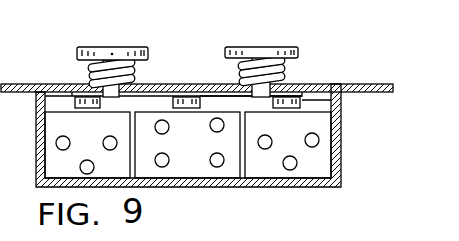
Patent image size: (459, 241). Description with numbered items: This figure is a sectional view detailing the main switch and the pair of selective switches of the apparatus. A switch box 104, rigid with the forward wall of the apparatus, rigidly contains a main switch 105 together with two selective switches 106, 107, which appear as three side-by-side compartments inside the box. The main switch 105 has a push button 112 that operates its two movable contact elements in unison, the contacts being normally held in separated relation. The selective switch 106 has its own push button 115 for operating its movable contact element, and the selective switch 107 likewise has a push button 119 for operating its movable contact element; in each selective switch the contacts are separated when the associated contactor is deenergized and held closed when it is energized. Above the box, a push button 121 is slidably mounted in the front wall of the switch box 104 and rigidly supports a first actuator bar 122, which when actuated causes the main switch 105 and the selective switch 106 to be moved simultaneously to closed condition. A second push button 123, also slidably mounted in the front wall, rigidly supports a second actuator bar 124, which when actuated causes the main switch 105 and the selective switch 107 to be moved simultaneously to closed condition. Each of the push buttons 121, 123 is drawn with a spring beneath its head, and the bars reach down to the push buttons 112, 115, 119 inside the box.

The switch box 104 is at (341, 148).
The main switch 105 is at (187, 145).
The selective switch 106 is at (87, 145).
The selective switch 107 is at (288, 145).
The push button 112 is at (190, 97).
The push button 115 is at (73, 97).
The push button 119 is at (302, 103).
The push button 121 is at (116, 22).
The first actuator bar 122 is at (143, 83).
The push button 123 is at (254, 50).
The second actuator bar 124 is at (224, 93).